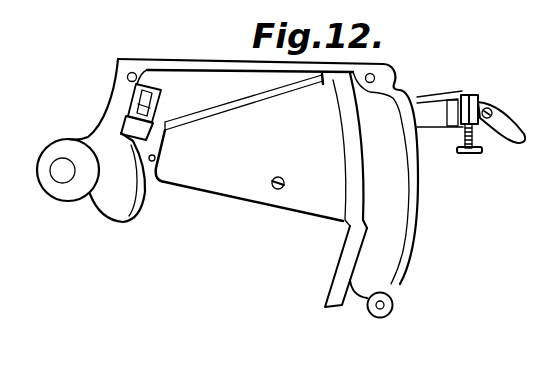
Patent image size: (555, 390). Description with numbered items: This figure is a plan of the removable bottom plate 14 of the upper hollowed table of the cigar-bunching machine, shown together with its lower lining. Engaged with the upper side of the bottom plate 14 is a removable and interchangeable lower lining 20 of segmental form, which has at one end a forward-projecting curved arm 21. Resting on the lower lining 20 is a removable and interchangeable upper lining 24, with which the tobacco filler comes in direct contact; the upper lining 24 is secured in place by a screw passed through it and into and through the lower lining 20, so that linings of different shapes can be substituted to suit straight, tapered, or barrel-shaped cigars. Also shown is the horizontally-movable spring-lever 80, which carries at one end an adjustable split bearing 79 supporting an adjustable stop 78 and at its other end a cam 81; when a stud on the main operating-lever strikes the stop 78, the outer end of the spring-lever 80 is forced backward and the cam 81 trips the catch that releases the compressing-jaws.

The bottom plate 14 is at (213, 92).
The lower lining 20 is at (355, 161).
The curved arm 21 is at (348, 266).
The upper lining 24 is at (249, 147).
The adjustable stop 78 is at (469, 152).
The adjustable split bearing 79 is at (479, 103).
The spring-lever 80 is at (122, 127).
The cam 81 is at (140, 101).